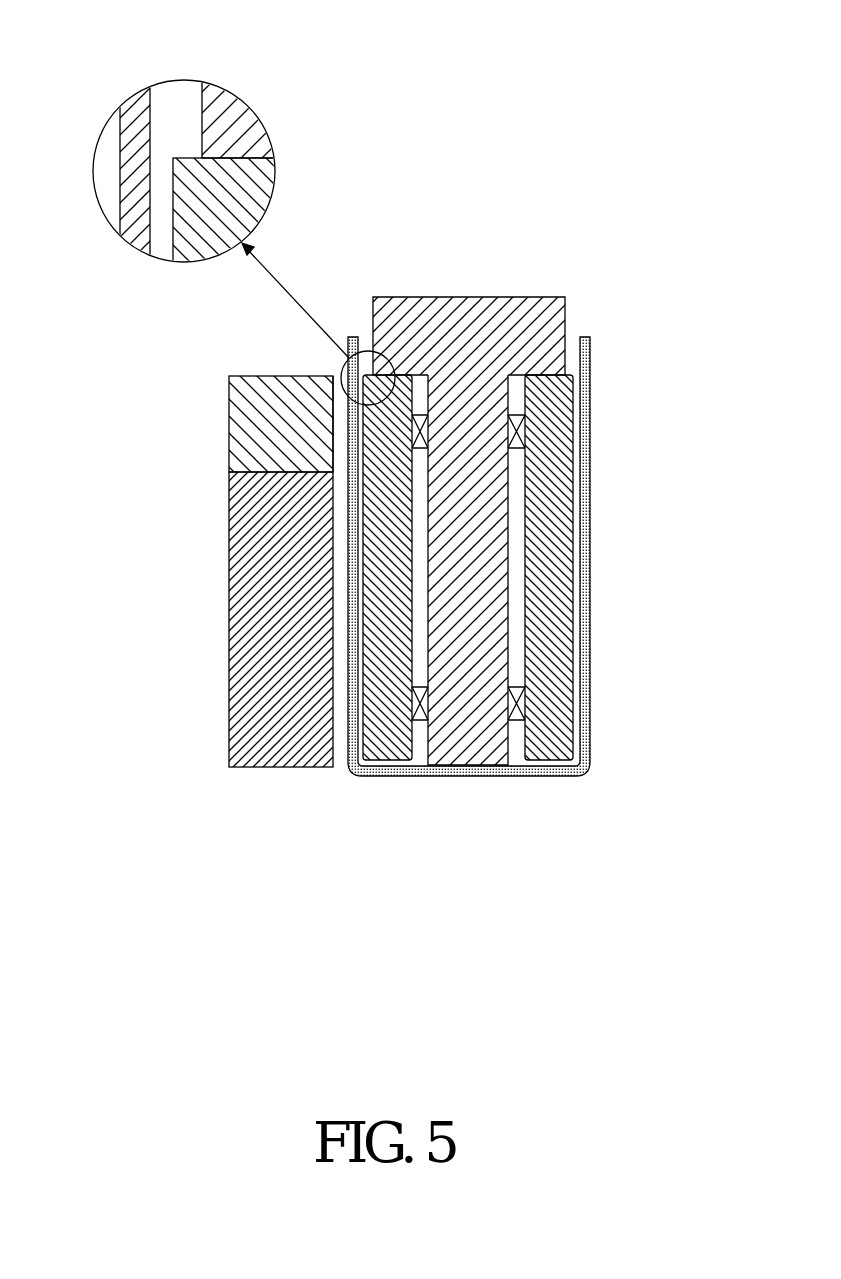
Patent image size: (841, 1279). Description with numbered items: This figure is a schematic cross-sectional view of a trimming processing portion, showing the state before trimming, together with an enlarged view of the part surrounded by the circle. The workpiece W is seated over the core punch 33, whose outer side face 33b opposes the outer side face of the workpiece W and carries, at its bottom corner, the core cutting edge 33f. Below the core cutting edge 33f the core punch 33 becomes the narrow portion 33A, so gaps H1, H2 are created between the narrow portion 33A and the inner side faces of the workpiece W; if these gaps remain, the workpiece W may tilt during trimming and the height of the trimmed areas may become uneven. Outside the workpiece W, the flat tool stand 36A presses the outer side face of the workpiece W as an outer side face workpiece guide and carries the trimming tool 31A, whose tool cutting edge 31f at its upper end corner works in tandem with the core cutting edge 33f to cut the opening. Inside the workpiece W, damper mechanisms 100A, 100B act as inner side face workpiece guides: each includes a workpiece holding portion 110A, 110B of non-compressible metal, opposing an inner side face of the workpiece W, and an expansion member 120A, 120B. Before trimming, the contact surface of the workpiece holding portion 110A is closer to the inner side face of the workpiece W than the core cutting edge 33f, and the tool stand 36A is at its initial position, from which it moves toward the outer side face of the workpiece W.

The core punch 33 is at (507, 297).
The narrow portion 33A is at (488, 738).
The outer side face 33b is at (200, 113).
The core cutting edge 33f is at (374, 372).
The trimming tool 31A is at (230, 457).
The tool cutting edge 31f is at (331, 378).
The tool stand 36A is at (245, 635).
The damper mechanism 100A is at (360, 687).
The damper mechanism 100B is at (575, 588).
The workpiece holding portion 110A is at (387, 737).
The workpiece holding portion 110B is at (575, 715).
The expansion member 120A is at (421, 434).
The expansion member 120B is at (518, 432).
The workpiece W is at (420, 778).
The gap H1 is at (362, 371).
The gap H2 is at (573, 371).